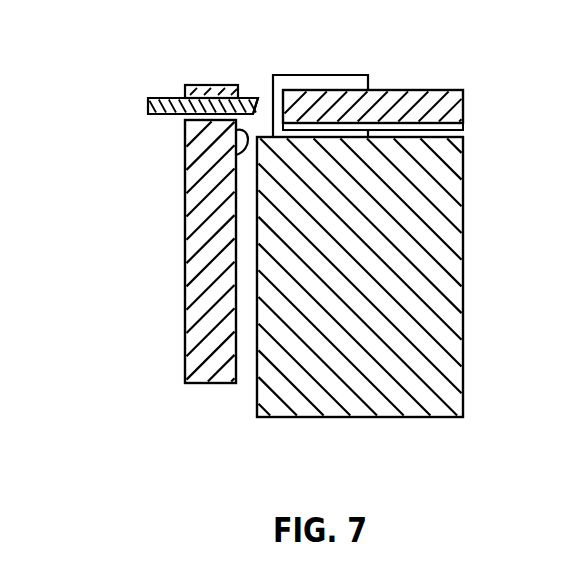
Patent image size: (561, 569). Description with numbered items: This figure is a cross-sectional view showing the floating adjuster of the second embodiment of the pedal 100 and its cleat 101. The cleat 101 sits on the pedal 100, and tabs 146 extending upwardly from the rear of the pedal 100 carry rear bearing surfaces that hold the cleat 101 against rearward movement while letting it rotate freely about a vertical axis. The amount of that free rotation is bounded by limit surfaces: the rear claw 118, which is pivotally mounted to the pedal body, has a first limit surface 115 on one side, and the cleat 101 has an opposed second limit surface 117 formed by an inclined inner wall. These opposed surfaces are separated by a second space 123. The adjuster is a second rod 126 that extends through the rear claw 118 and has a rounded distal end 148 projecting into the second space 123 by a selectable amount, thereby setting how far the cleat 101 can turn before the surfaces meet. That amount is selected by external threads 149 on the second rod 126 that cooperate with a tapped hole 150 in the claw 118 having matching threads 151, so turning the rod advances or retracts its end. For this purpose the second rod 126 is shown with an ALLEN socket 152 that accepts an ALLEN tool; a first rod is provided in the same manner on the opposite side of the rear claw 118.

The pedal 100 is at (443, 232).
The cleat 101 is at (425, 100).
The tabs 146 is at (300, 83).
The second limit surface 117 is at (277, 122).
The second space 123 is at (261, 106).
The ALLEN socket 152 is at (152, 108).
The rounded distal end 148 is at (257, 98).
The second rod 126 is at (167, 98).
The claw 118 is at (200, 320).
The external threads 149 is at (183, 119).
The threads 151 is at (232, 121).
The tapped hole 150 is at (234, 132).
The first limit surface 115 is at (236, 140).